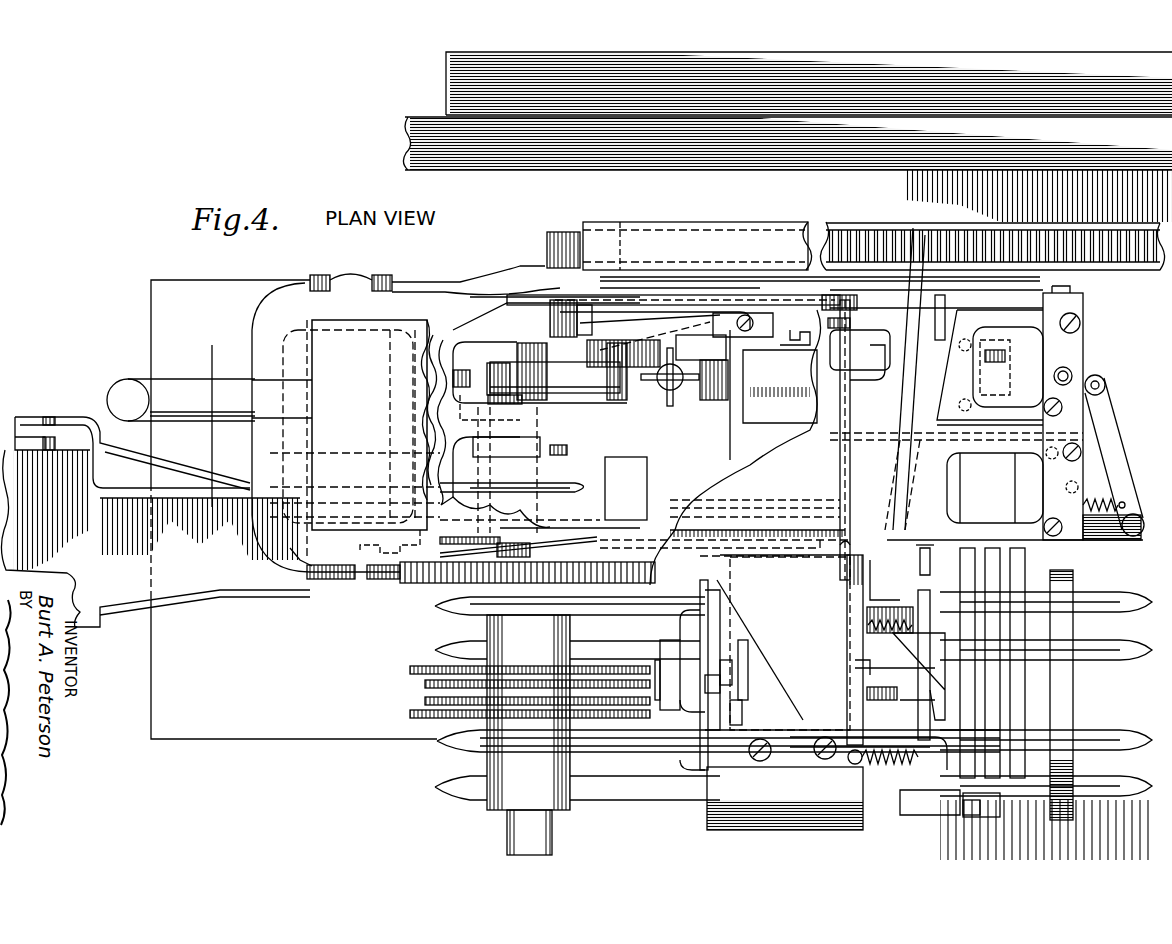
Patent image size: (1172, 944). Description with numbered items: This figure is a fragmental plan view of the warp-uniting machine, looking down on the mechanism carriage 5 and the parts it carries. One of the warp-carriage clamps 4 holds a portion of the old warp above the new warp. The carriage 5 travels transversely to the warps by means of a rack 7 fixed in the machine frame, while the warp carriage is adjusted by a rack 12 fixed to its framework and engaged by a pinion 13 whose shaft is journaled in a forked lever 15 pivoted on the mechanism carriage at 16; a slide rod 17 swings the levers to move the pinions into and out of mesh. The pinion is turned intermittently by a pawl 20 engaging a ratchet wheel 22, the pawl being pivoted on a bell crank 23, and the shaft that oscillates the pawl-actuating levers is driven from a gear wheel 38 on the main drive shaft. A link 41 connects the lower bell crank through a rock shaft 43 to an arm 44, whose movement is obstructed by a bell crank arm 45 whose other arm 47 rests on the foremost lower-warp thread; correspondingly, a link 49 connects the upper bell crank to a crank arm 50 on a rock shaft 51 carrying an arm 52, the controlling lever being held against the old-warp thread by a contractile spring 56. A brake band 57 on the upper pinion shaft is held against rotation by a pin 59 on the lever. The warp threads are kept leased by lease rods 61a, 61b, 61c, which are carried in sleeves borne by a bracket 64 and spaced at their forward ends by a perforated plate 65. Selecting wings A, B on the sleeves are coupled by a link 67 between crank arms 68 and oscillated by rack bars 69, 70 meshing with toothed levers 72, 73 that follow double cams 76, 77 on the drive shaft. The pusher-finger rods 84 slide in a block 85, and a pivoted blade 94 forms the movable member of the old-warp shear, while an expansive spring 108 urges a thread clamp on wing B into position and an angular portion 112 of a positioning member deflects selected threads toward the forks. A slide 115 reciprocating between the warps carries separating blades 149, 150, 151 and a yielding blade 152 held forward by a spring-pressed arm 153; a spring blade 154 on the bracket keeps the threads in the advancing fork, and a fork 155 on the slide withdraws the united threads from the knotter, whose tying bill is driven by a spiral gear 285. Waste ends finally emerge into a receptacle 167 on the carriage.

The clamp 4 is at (406, 136).
The carriage 5 is at (237, 728).
The rack 7 is at (870, 240).
The rack 12 is at (729, 224).
The pinion 13 is at (556, 248).
The forked lever 15 is at (490, 284).
The pivot 16 is at (354, 282).
The slide rod 17 is at (187, 390).
The pawl 20 is at (553, 352).
The ratchet wheel 22 is at (661, 327).
The bell crank 23 is at (597, 313).
The gear wheel 38 is at (408, 585).
The link 41 is at (897, 302).
The rock shaft 43 is at (972, 567).
The arm 44 is at (993, 815).
The bell crank arm 45 is at (965, 810).
The arm 47 is at (925, 815).
The link 49 is at (684, 303).
The crank arm 50 is at (866, 341).
The rock shaft 51 is at (848, 464).
The arm 52 is at (868, 742).
The contractile spring 56 is at (885, 762).
The brake band 57 is at (628, 383).
The pin 59 is at (498, 402).
The lease rod 61a is at (1108, 638).
The lease rod 61b is at (1108, 597).
The lease rod 61c is at (1108, 782).
The bracket 64 is at (745, 810).
The plate 65 is at (1065, 690).
The link 67 is at (740, 700).
The crank arm 68 is at (725, 600).
The rack bar 69 is at (718, 690).
The rack bar 70 is at (740, 680).
The lever 72 is at (665, 700).
The lever 73 is at (650, 690).
The cam 76 is at (425, 684).
The cam 77 is at (410, 714).
The rod 84 is at (697, 758).
The block 85 is at (733, 648).
The blade 94 is at (878, 662).
The expansive spring 108 is at (888, 614).
The angular portion 112 is at (920, 558).
The slide 115 is at (1010, 487).
The separating blade 149 is at (1030, 535).
The separating blade 150 is at (900, 530).
The separating blade 151 is at (1068, 342).
The blade 152 is at (938, 398).
The spring-pressed arm 153 is at (1112, 450).
The spring blade 154 is at (807, 560).
The fork 155 is at (814, 260).
The receptacle 167 is at (90, 598).
The spiral gear 285 is at (765, 395).
The selecting wing A is at (935, 702).
The selecting wing B is at (930, 626).